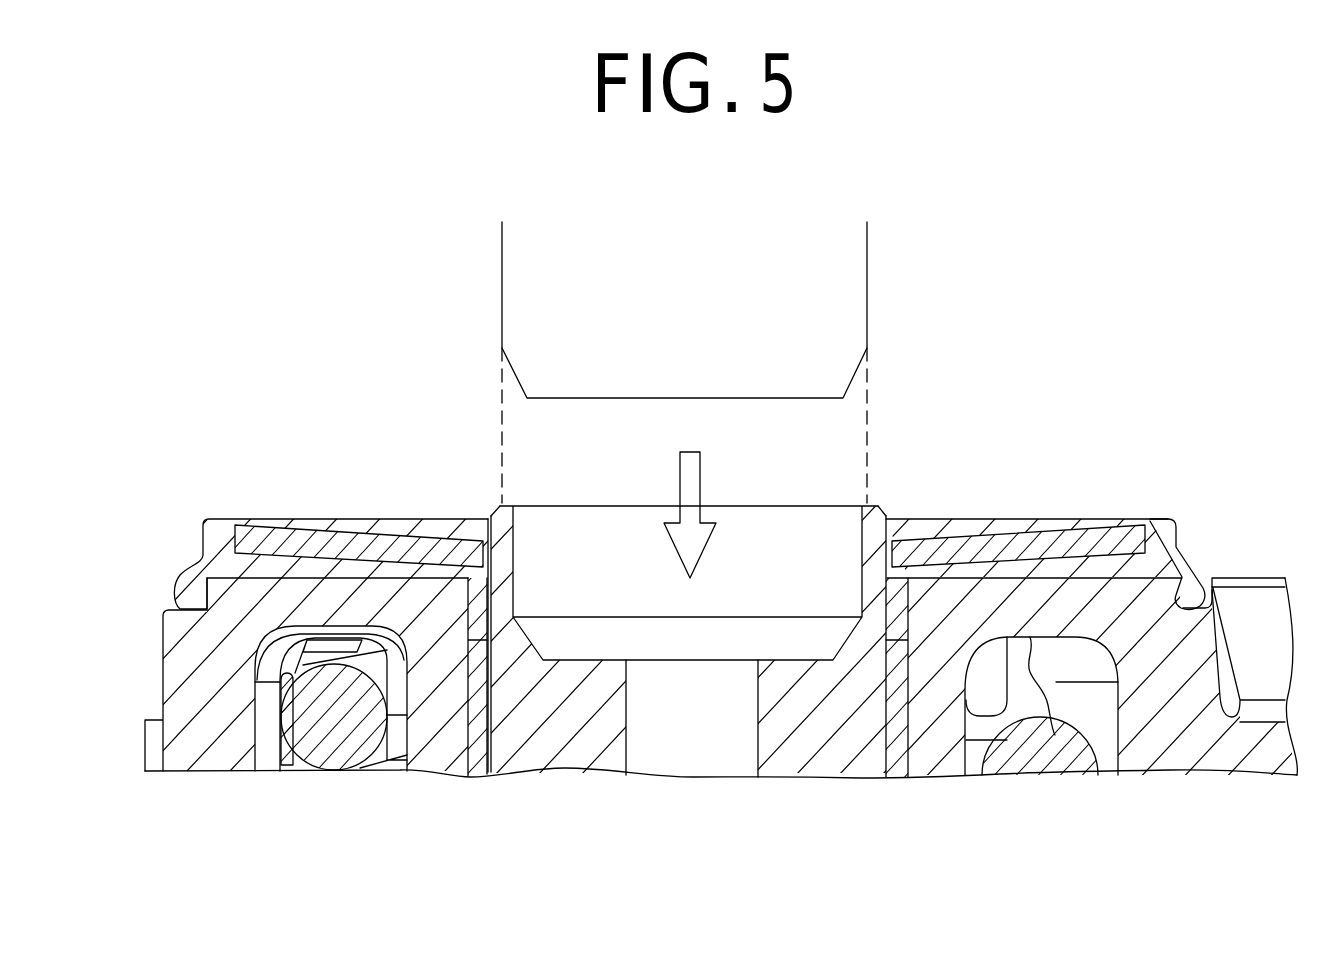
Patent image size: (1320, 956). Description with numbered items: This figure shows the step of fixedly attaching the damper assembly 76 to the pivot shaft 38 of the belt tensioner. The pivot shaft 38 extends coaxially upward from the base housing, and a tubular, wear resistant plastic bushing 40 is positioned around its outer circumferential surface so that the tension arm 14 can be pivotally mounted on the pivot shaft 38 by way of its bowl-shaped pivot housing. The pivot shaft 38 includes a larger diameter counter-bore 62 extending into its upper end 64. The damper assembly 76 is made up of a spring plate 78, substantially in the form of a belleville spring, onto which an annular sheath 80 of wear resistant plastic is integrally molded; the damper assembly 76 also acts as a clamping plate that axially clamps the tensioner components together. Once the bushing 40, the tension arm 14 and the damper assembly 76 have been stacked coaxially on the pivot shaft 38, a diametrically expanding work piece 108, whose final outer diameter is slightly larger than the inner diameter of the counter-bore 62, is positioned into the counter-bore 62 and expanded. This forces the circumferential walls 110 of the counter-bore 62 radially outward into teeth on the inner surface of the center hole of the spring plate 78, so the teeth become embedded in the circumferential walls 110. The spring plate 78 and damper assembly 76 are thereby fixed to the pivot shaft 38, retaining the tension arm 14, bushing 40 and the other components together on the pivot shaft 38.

The tension arm 14 is at (183, 663).
The pivot shaft 38 is at (860, 740).
The bushing 40 is at (475, 763).
The counter-bore 62 is at (865, 572).
The upper end 64 is at (498, 506).
The damper assembly 76 is at (268, 465).
The spring plate 78 is at (1065, 545).
The sheath 80 is at (348, 668).
The work piece 108 is at (833, 278).
The circumferential walls 110 is at (880, 543).